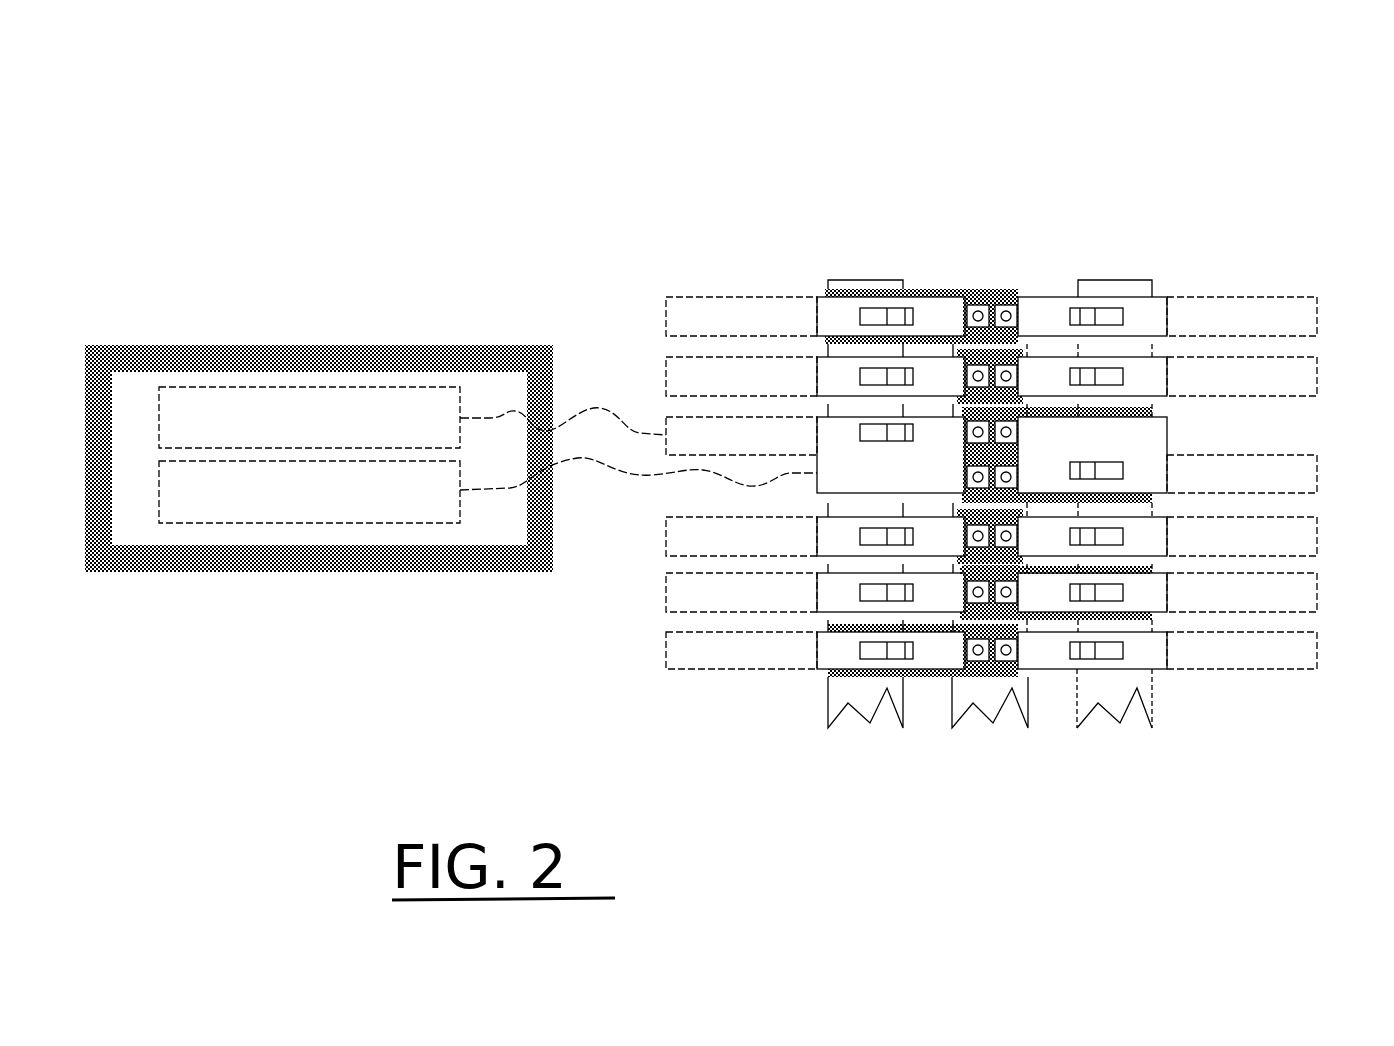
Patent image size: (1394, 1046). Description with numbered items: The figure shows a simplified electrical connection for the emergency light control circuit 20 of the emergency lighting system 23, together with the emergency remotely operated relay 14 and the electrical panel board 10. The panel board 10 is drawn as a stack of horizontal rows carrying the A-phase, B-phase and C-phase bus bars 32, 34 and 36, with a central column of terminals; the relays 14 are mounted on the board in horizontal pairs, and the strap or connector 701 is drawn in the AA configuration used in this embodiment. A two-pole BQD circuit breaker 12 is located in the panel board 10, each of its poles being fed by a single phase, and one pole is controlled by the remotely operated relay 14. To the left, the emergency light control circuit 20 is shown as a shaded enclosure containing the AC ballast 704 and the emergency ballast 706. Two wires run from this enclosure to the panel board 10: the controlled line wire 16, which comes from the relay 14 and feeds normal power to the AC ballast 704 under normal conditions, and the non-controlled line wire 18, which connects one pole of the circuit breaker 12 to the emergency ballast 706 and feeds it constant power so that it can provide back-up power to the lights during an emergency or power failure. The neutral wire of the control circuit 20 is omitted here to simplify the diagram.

The panel board 10 is at (992, 160).
The circuit breaker 12 is at (830, 480).
The emergency remotely operated relay 14 is at (690, 435).
The controlled line wire 16 is at (570, 425).
The non-controlled line wire 18 is at (593, 466).
The emergency lighting control circuit 20 is at (270, 355).
The emergency lighting system 23 is at (662, 172).
The A-phase bus bar 32 is at (840, 693).
The B-phase bus bar 34 is at (968, 695).
The C-phase bus bar 36 is at (1148, 690).
The strap or connector 701 is at (921, 290).
The AC ballast 704 is at (185, 408).
The emergency ballast 706 is at (178, 505).